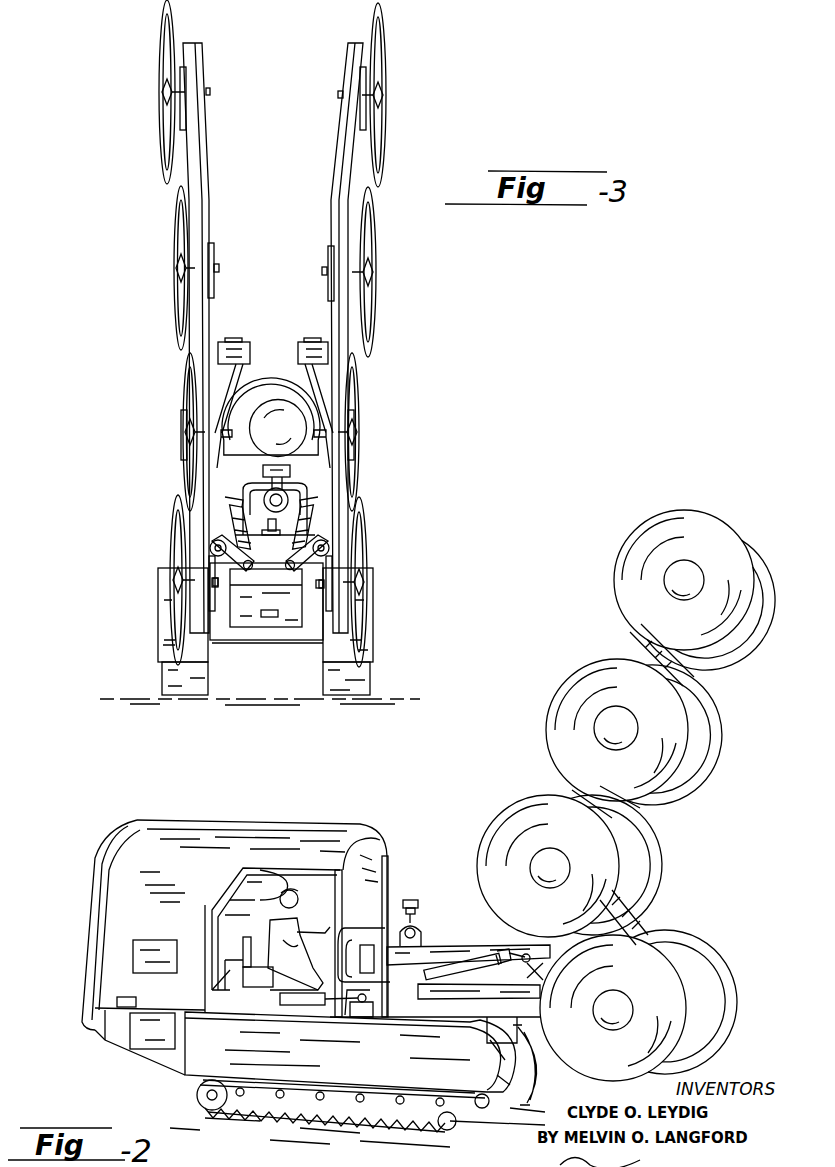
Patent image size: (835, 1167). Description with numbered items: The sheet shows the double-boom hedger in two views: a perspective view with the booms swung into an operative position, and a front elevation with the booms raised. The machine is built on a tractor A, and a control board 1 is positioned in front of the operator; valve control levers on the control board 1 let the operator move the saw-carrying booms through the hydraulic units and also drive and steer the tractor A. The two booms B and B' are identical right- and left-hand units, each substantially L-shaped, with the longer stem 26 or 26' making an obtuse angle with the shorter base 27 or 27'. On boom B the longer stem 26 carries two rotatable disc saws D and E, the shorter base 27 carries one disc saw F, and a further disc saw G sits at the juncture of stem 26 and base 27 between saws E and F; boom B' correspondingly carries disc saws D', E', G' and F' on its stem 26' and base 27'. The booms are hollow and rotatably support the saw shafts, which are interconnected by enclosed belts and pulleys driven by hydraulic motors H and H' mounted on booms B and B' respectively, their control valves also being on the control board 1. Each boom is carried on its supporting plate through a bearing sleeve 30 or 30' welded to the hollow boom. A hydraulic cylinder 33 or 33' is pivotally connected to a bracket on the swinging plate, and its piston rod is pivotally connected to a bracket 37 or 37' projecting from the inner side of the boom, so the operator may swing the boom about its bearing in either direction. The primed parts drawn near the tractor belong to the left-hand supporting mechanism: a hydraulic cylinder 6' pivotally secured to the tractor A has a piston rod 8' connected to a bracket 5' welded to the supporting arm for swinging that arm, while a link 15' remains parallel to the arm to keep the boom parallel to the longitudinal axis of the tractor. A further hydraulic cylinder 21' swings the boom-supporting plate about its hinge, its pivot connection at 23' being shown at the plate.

In FIG. 3, the longer stem 26' is at (218, 321).
In FIG. 3, the longer stem 26 is at (326, 338).
In FIG. 3, the boom B' is at (227, 338).
In FIG. 3, the boom B is at (329, 338).
In FIG. 2, the boom B is at (646, 803).
In FIG. 3, the disc saw D' is at (161, 92).
In FIG. 3, the disc saw D is at (380, 95).
In FIG. 3, the disc saw E' is at (169, 268).
In FIG. 2, the disc saw E' is at (584, 730).
In FIG. 3, the disc saw E is at (369, 272).
In FIG. 2, the disc saw E is at (681, 742).
In FIG. 3, the disc saw G' is at (164, 432).
In FIG. 2, the disc saw G' is at (548, 866).
In FIG. 3, the disc saw G is at (374, 432).
In FIG. 2, the disc saw G is at (643, 865).
In FIG. 3, the disc saw F' is at (161, 580).
In FIG. 2, the disc saw F' is at (642, 1008).
In FIG. 3, the disc saw F is at (365, 582).
In FIG. 2, the disc saw F is at (703, 1002).
In FIG. 3, the hydraulic motor H' is at (244, 384).
In FIG. 3, the hydraulic motor H is at (309, 386).
In FIG. 3, the hydraulic cylinder 33' is at (178, 519).
In FIG. 3, the hydraulic cylinder 33 is at (354, 513).
In FIG. 3, the shorter base 27' is at (173, 588).
In FIG. 3, the shorter base 27 is at (351, 539).
In FIG. 3, the bearing sleeve 30' is at (164, 559).
In FIG. 3, the bearing sleeve 30 is at (367, 560).
In FIG. 3, the bracket 37' is at (248, 584).
In FIG. 3, the bracket 37 is at (283, 584).
In FIG. 3, the tractor A is at (302, 647).
In FIG. 2, the tractor A is at (208, 1056).
In FIG. 2, the control board 1 is at (361, 923).
In FIG. 2, the hydraulic cylinder 6' is at (301, 1027).
In FIG. 2, the piston rod 8' is at (333, 1025).
In FIG. 2, the bracket 5' is at (373, 1031).
In FIG. 2, the link 15' is at (438, 923).
In FIG. 2, the hydraulic cylinder 21' is at (474, 974).
In FIG. 2, the pivot connection 23' is at (519, 976).